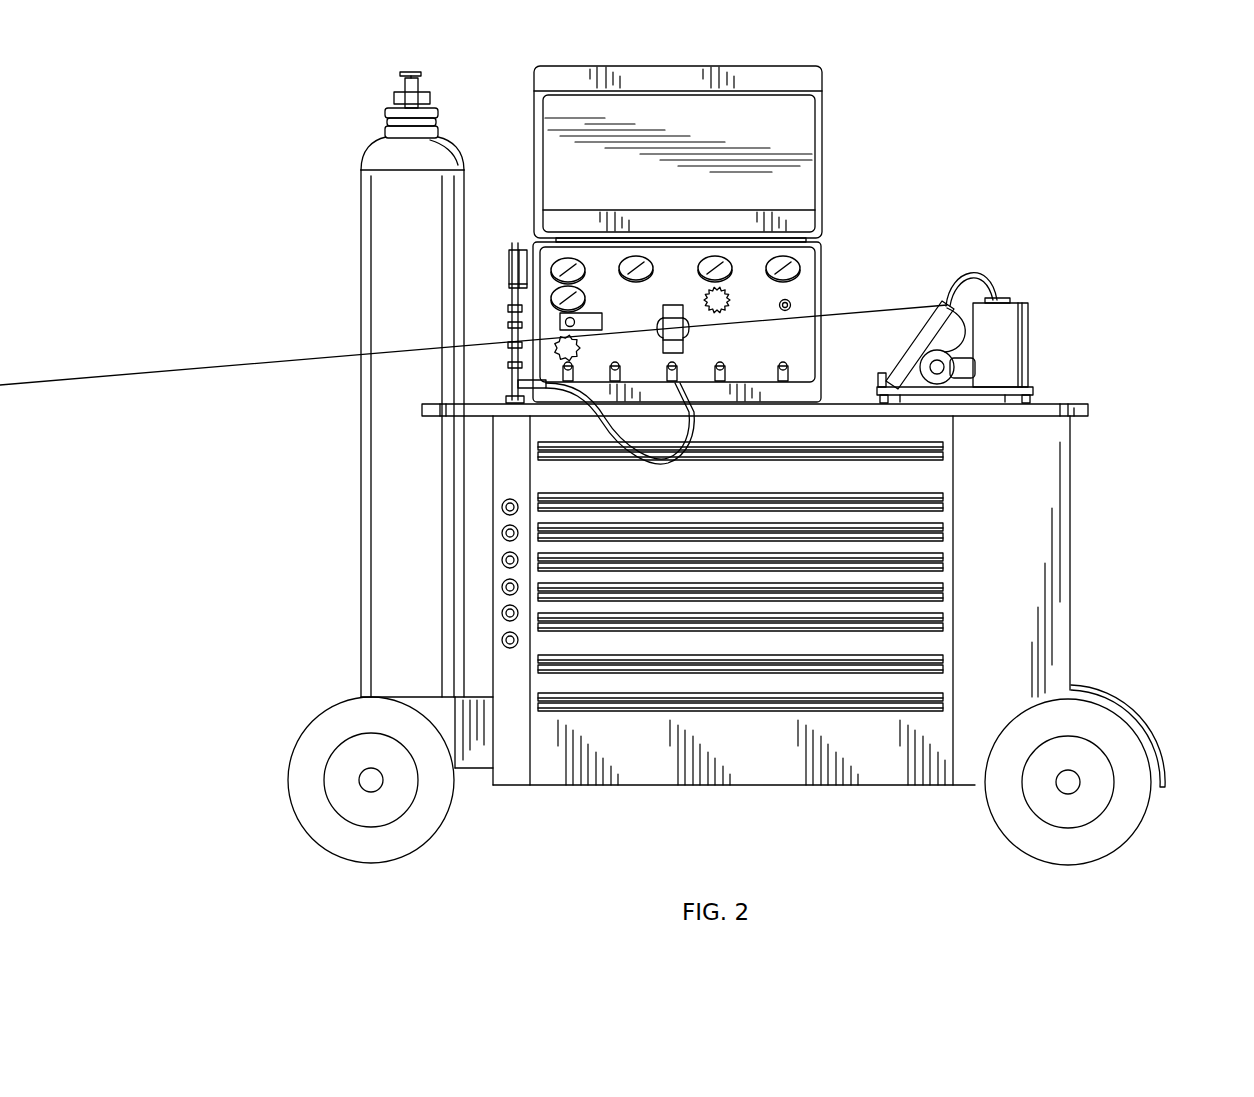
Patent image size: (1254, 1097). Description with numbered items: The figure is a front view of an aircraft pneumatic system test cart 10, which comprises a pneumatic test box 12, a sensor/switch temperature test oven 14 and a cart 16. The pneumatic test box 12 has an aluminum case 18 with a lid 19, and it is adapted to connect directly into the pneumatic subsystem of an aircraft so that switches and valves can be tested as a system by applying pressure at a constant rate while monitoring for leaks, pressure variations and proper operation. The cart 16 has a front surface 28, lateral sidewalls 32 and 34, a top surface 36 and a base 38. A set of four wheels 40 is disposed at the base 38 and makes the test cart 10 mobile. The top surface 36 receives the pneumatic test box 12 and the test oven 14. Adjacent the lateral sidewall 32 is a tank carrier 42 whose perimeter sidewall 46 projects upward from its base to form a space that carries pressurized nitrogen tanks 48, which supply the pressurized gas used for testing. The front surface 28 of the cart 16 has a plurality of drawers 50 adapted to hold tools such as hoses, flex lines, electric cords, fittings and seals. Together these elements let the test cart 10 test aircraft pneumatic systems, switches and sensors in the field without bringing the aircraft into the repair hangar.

The aircraft pneumatic system test cart 10 is at (606, 463).
The pneumatic test box 12 is at (719, 262).
The sensor/switch temperature test oven 14 is at (1053, 287).
The cart 16 is at (712, 612).
The aluminum case 18 is at (818, 287).
The lid 19 is at (803, 79).
The front surface 28 is at (1023, 594).
The lateral sidewall 32 is at (492, 528).
The lateral sidewall 34 is at (1072, 548).
The top surface 36 is at (1082, 404).
The base 38 is at (780, 790).
The wheels 40 is at (300, 808).
The tank carrier 42 is at (712, 748).
The perimeter sidewall 46 is at (455, 743).
The pressurized nitrogen tanks 48 is at (390, 262).
The drawers 50 is at (941, 545).